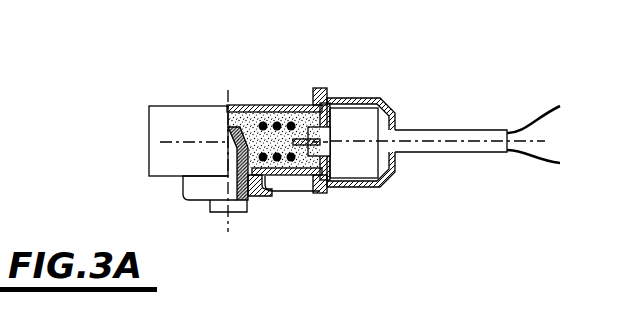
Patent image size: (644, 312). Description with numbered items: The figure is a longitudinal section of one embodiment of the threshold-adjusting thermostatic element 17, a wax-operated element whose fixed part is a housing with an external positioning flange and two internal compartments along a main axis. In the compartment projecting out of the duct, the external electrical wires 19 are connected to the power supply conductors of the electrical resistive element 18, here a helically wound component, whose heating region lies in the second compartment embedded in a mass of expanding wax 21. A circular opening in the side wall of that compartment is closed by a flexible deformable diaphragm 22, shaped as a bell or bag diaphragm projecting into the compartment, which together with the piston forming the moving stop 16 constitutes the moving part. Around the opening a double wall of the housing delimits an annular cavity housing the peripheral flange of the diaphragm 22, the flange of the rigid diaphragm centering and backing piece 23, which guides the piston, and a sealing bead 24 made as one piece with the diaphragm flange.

The moving stop 16 is at (220, 208).
The threshold-adjusting thermostatic element 17 is at (268, 108).
The electrical resistive element 18 is at (292, 115).
The external electrical wires 19 is at (547, 152).
The expanding wax 21 is at (238, 117).
The flexible deformable diaphragm 22 is at (237, 164).
The diaphragm centering and backing piece 23 is at (240, 192).
The sealing bead 24 is at (260, 198).